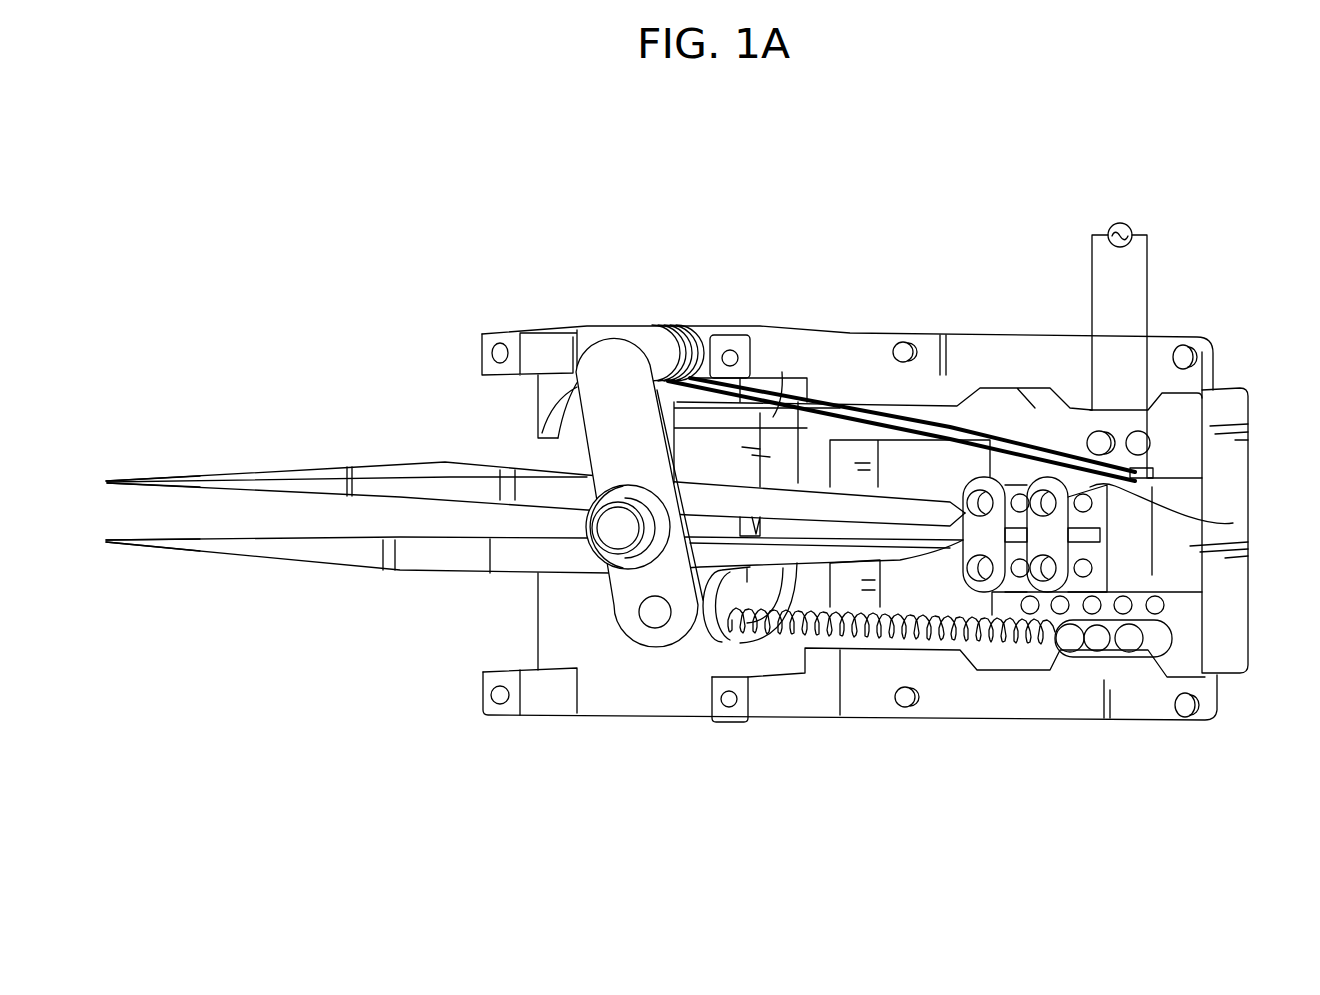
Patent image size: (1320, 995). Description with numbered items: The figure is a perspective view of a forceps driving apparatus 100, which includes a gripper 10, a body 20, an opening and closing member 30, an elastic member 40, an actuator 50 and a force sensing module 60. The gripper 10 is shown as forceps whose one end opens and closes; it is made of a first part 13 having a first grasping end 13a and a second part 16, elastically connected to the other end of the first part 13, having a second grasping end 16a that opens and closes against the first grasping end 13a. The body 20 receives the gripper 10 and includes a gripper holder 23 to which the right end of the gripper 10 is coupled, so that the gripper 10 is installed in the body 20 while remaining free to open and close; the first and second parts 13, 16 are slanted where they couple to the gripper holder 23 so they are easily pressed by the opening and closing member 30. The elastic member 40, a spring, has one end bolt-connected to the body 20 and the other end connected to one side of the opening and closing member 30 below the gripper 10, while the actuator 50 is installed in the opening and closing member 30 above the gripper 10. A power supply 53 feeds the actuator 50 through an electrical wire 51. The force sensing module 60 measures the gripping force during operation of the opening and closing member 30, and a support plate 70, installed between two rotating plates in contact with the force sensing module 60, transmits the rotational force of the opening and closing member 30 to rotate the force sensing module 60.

The forceps driving apparatus 100 is at (850, 215).
The gripper 10 is at (439, 461).
The first part 13 is at (299, 468).
The first grasping end 13a is at (190, 487).
The second part 16 is at (447, 575).
The second grasping end 16a is at (183, 540).
The body 20 is at (678, 722).
The gripper holder 23 is at (1233, 523).
The opening and closing member 30 is at (589, 333).
The elastic member 40 is at (877, 634).
The actuator 50 is at (990, 430).
The electrical wire 51 is at (1150, 278).
The power supply 53 is at (1125, 223).
The force sensing module 60 is at (801, 438).
The support plate 70 is at (782, 372).